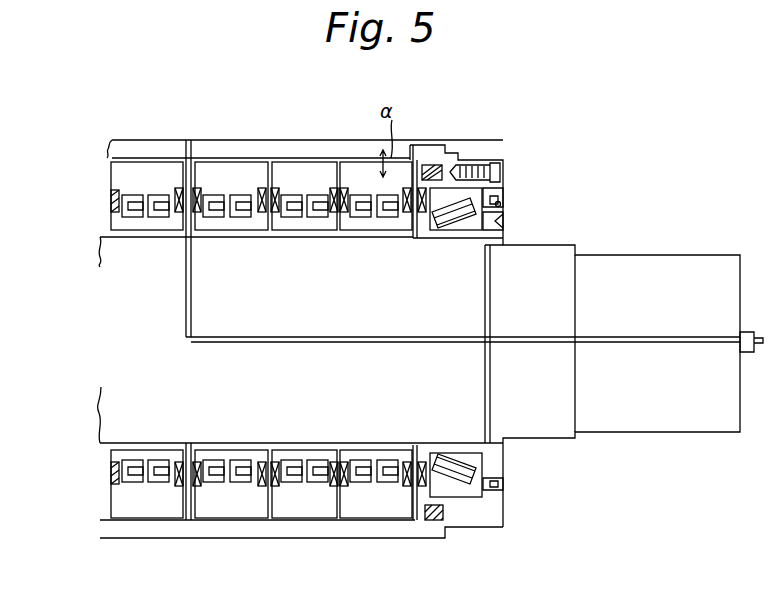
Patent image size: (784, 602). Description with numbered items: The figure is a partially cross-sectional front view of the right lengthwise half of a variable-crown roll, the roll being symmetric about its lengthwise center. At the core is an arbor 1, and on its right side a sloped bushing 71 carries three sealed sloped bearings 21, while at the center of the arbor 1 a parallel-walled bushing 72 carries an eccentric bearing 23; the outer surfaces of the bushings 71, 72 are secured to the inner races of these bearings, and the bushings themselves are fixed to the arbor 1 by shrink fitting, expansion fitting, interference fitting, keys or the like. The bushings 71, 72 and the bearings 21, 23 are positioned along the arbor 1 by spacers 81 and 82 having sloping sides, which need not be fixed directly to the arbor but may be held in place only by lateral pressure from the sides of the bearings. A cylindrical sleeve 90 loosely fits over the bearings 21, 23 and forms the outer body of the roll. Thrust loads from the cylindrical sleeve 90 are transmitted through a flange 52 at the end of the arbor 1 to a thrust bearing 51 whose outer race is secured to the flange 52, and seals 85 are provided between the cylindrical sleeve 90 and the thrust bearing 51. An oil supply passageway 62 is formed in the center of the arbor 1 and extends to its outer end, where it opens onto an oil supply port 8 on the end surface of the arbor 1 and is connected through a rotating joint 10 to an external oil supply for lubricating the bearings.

The arbor 1 is at (655, 258).
The oil supply port 8 is at (678, 345).
The rotating joint 10 is at (746, 331).
The sloped bearings 21 is at (307, 508).
The eccentric bearing 23 is at (165, 505).
The thrust bearings 51 is at (488, 186).
The flanges 52 is at (462, 155).
The oil supply passageway 62 is at (330, 344).
The sloped bushing 71 is at (403, 240).
The parallel-walled bushing 72 is at (130, 238).
The spacer 81 is at (189, 158).
The spacer 82 is at (416, 145).
The seals 85 is at (433, 522).
The cylindrical sleeve 90 is at (438, 148).